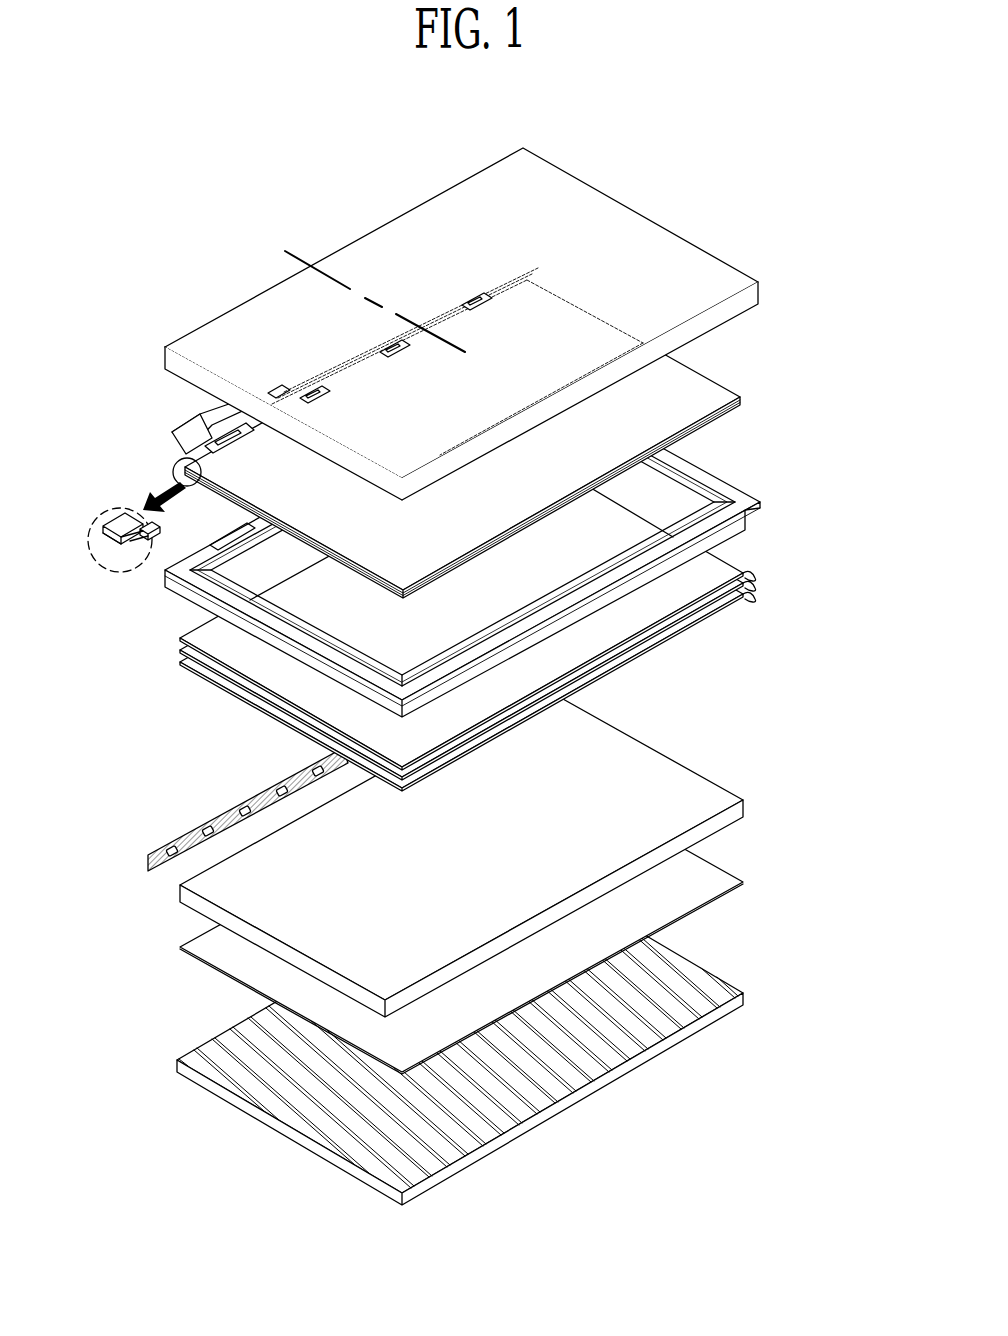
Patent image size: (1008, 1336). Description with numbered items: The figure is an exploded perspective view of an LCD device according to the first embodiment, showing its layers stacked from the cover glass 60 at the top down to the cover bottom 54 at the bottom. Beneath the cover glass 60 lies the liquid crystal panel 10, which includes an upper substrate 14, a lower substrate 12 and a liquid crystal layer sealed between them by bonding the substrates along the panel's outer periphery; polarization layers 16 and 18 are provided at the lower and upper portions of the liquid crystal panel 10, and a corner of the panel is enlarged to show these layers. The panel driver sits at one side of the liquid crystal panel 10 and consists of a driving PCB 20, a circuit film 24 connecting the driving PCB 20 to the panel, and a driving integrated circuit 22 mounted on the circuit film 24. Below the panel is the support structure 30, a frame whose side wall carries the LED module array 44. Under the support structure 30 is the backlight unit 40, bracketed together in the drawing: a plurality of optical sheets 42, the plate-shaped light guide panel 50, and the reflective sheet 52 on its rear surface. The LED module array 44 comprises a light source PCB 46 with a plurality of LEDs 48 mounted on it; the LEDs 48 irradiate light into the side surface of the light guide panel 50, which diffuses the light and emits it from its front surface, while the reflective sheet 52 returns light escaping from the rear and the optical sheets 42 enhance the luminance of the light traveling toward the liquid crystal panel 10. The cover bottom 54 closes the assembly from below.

The liquid crystal panel 10 is at (756, 399).
The lower substrate 12 is at (97, 518).
The upper substrate 14 is at (141, 575).
The polarization layer 16 is at (95, 556).
The polarization layer 18 is at (156, 534).
The driving PCB 20 is at (228, 410).
The driving integrated circuit 22 is at (213, 431).
The circuit film 24 is at (182, 432).
The support structure 30 is at (770, 497).
The backlight unit 40 is at (830, 900).
The optical sheets 42 is at (758, 582).
The LED module array 44 is at (227, 809).
The light source printed circuit board 46 is at (165, 842).
The LEDs 48 is at (208, 812).
The light guide panel 50 is at (746, 806).
The reflective sheet 52 is at (722, 888).
The cover bottom 54 is at (750, 1000).
The cover glass 60 is at (760, 296).